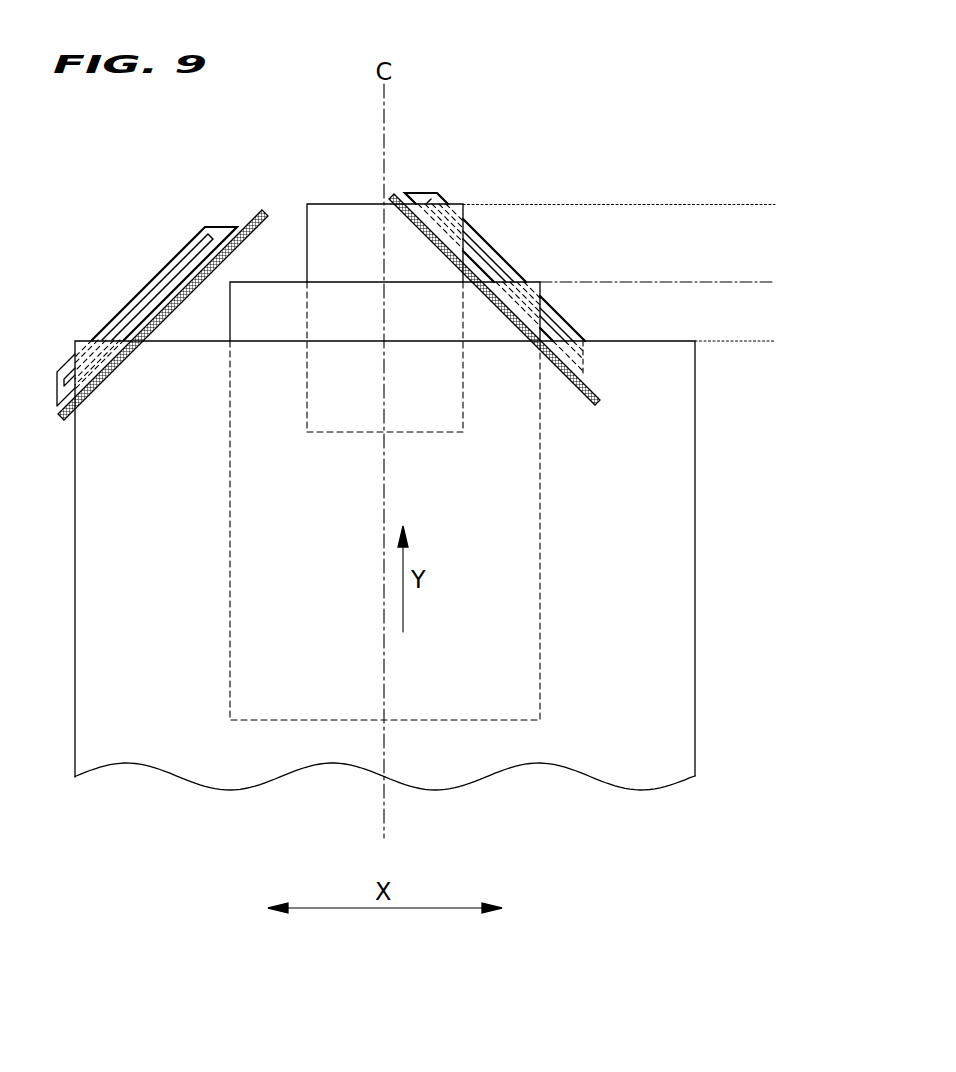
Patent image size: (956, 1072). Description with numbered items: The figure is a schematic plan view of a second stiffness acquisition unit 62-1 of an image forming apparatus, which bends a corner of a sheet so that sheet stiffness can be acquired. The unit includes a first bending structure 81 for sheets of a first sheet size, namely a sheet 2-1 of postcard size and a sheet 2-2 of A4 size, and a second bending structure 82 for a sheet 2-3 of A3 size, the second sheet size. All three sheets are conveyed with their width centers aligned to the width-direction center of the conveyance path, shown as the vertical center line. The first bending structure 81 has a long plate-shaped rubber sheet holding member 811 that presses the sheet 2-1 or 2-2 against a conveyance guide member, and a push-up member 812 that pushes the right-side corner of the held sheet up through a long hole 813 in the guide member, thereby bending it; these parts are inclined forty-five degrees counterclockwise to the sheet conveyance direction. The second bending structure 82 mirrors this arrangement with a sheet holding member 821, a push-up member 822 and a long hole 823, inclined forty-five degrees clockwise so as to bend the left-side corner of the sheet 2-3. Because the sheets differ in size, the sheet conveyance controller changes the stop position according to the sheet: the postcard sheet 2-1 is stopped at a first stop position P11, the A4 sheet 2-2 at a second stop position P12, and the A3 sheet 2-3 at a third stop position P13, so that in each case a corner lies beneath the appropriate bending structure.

The second stiffness acquisition unit 62-1 is at (709, 115).
The sheet of postcard size 2-1 is at (347, 204).
The sheet of A4 size 2-2 is at (257, 281).
The sheet of A3 size 2-3 is at (697, 437).
The first bending structure 81 is at (529, 267).
The sheet holding member 811 is at (582, 384).
The push-up member 812 is at (484, 214).
The long hole 813 is at (505, 262).
The second bending structure 82 is at (157, 275).
The sheet holding member 821 is at (261, 208).
The push-up member 822 is at (119, 322).
The long hole 823 is at (168, 265).
The first stop position P11 is at (646, 204).
The second stop position P12 is at (685, 281).
The third stop position P13 is at (762, 341).